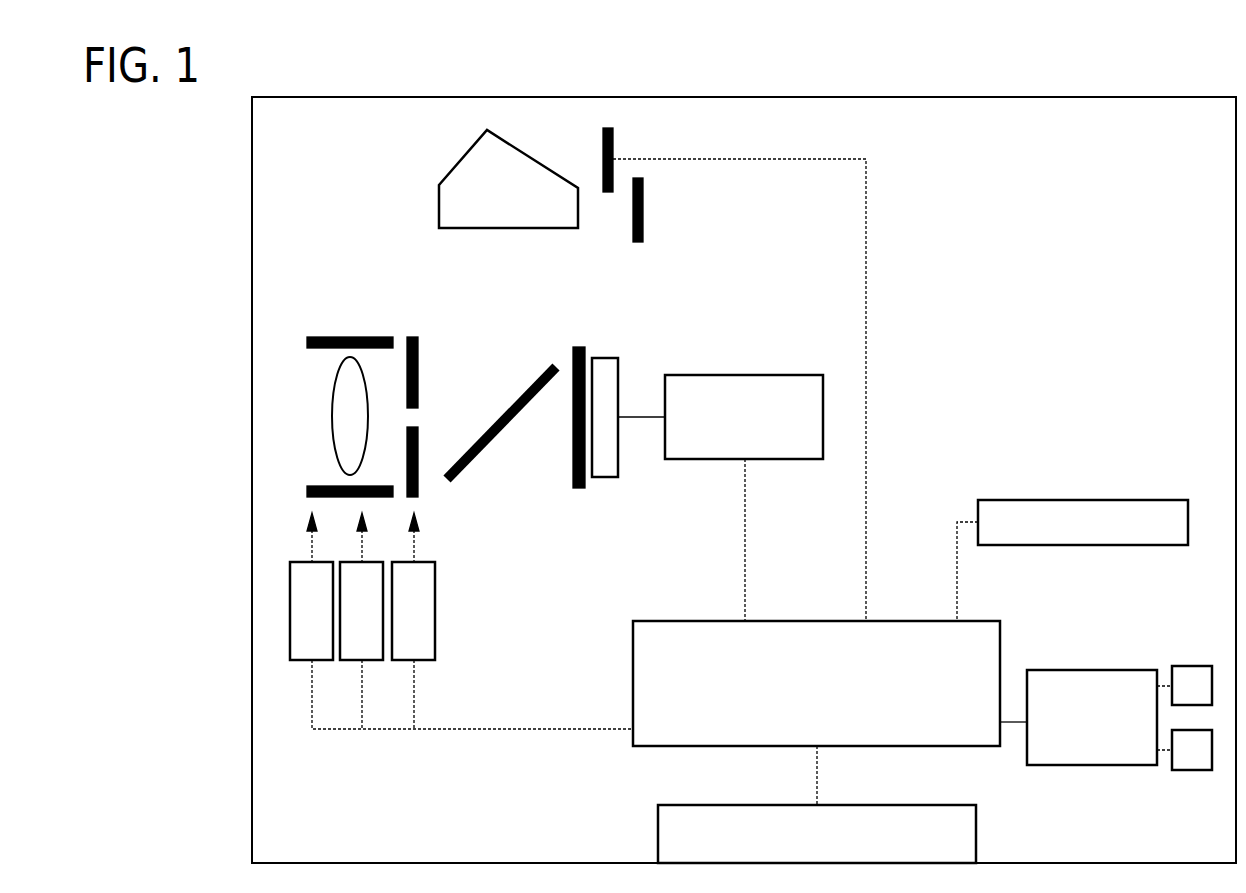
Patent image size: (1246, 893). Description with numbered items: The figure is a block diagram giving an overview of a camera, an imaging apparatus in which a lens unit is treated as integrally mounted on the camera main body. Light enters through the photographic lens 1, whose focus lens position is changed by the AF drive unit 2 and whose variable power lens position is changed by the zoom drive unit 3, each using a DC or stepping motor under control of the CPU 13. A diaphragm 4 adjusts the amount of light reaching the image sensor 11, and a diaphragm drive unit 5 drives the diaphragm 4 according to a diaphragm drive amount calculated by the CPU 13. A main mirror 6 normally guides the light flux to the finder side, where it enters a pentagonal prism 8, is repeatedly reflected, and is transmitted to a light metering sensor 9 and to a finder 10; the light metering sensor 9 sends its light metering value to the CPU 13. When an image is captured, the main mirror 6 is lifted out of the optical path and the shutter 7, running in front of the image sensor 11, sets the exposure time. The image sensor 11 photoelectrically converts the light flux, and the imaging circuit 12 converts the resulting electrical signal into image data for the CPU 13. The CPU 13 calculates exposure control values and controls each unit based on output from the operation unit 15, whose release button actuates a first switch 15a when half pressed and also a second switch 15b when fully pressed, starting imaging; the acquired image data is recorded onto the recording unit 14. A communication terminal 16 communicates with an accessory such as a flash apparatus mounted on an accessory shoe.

The photographic lens 1 is at (332, 412).
The automatic focus (AF) drive unit 2 is at (300, 562).
The zoom drive unit 3 is at (350, 562).
The diaphragm 4 is at (412, 337).
The diaphragm drive unit 5 is at (402, 562).
The main mirror 6 is at (545, 378).
The shutter 7 is at (584, 347).
The pentagonal prism 8 is at (439, 190).
The light metering sensor 9 is at (603, 150).
The finder 10 is at (643, 207).
The image sensor 11 is at (620, 370).
The imaging circuit 12 is at (752, 375).
The central processing unit (CPU) 13 is at (633, 678).
The recording unit 14 is at (1075, 500).
The operation unit 15 is at (1078, 670).
The first switch (SW1) 15a is at (1188, 666).
The second switch (SW2) 15b is at (1188, 770).
The communication terminal 16 is at (658, 828).